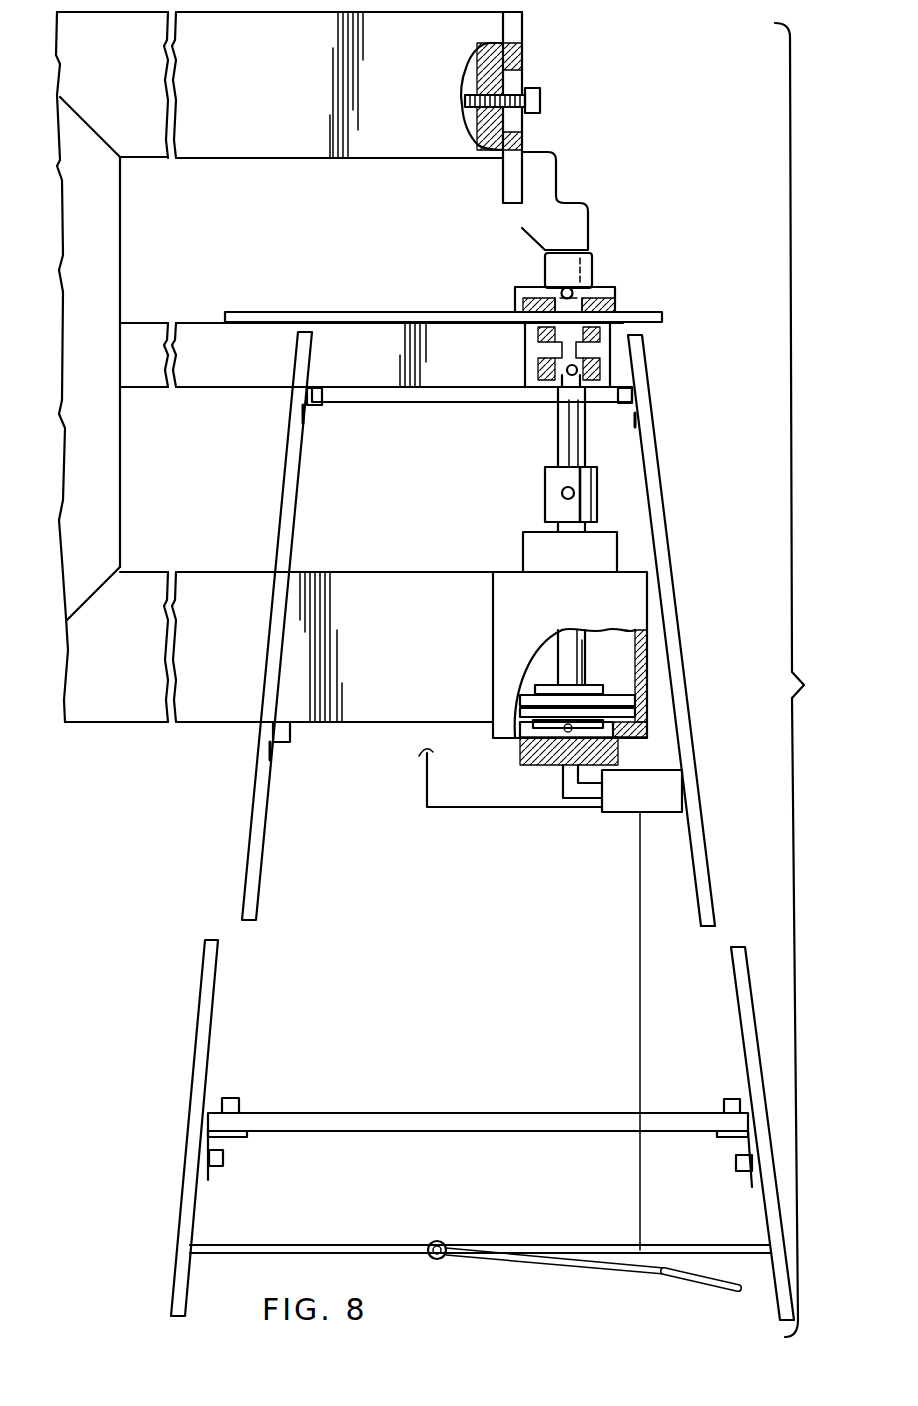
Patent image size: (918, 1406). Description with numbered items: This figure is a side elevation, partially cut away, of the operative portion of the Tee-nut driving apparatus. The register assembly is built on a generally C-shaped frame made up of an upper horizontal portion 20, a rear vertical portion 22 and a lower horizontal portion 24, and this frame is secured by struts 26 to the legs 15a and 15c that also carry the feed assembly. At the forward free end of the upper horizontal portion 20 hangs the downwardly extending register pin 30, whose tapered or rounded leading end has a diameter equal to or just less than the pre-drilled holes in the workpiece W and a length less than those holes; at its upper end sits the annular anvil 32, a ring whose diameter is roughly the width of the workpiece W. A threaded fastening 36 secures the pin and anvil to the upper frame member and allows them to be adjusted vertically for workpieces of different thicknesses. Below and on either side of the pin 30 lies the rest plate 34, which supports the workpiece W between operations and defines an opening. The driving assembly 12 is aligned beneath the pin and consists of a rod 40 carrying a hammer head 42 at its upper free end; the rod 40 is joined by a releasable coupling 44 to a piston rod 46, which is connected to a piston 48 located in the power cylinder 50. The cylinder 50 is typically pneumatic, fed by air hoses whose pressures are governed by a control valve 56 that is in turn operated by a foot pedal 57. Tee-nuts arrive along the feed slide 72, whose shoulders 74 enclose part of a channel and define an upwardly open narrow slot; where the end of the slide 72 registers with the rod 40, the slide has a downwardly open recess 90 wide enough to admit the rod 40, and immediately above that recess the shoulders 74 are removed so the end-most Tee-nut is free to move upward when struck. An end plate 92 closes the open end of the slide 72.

The driving assembly 12 is at (612, 460).
The leg 15a is at (668, 538).
The leg 15c is at (285, 530).
The upper horizontal portion 20 is at (287, 137).
The rear vertical portion 22 is at (105, 242).
The lower horizontal portion 24 is at (348, 592).
The struts 26 is at (322, 397).
The register pin 30 is at (577, 297).
The annular anvil 32 is at (593, 270).
The rest plate 34 is at (370, 312).
The threaded fastening 36 is at (543, 103).
The rod 40 is at (557, 425).
The hammer head 42 is at (537, 338).
The releasable coupling 44 is at (543, 483).
The piston rod 46 is at (540, 525).
The piston 48 is at (615, 688).
The power cylinder 50 is at (512, 632).
The control valve 56 is at (612, 803).
The foot pedal 57 is at (601, 1264).
The feed slide 72 is at (533, 370).
The shoulders 74 is at (627, 308).
The downwardly open recess 90 is at (603, 348).
The end plate 92 is at (528, 306).
The workpiece W is at (515, 305).